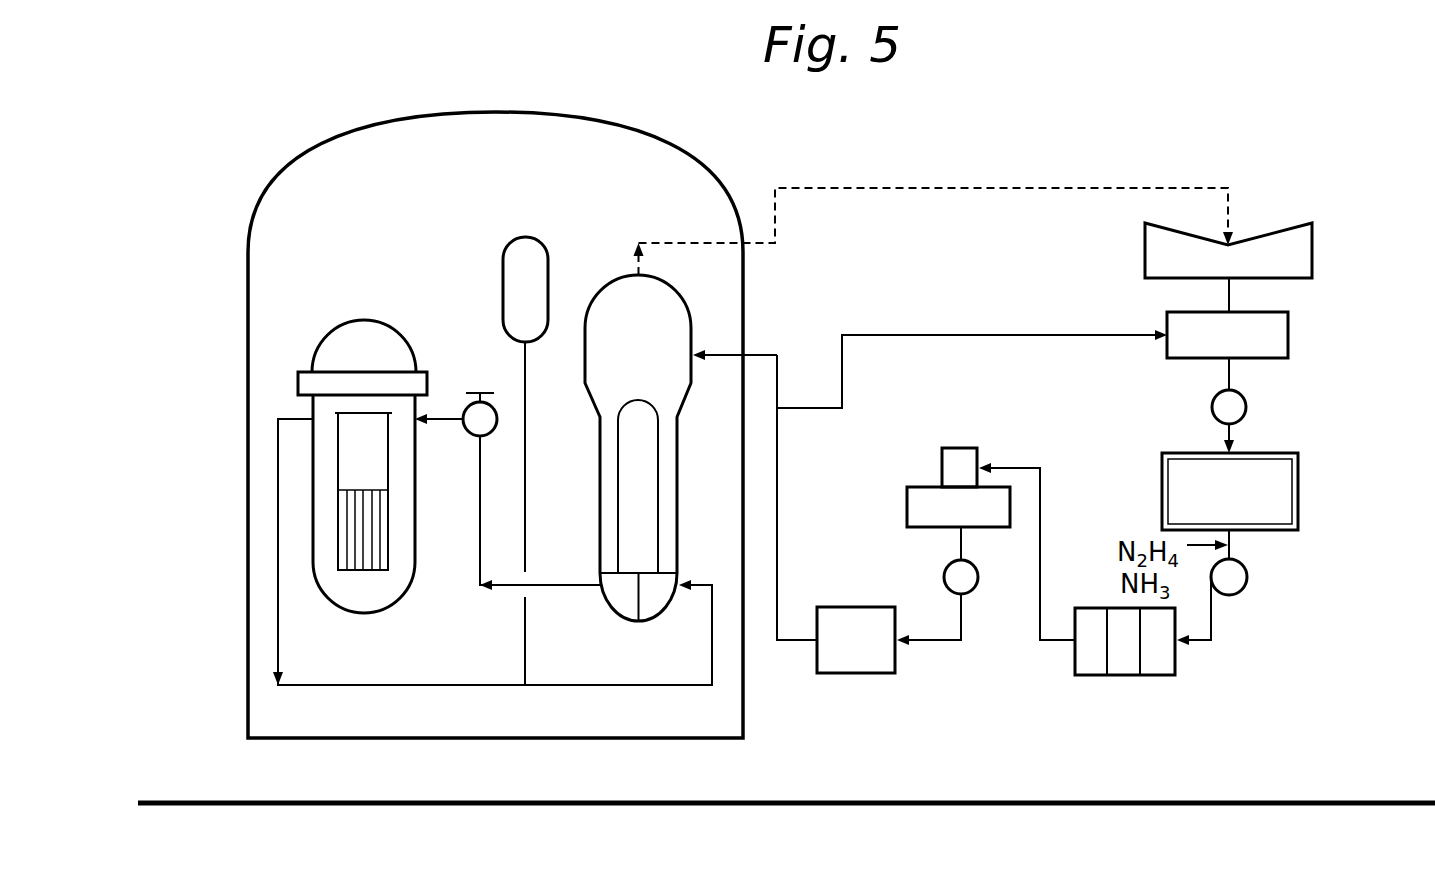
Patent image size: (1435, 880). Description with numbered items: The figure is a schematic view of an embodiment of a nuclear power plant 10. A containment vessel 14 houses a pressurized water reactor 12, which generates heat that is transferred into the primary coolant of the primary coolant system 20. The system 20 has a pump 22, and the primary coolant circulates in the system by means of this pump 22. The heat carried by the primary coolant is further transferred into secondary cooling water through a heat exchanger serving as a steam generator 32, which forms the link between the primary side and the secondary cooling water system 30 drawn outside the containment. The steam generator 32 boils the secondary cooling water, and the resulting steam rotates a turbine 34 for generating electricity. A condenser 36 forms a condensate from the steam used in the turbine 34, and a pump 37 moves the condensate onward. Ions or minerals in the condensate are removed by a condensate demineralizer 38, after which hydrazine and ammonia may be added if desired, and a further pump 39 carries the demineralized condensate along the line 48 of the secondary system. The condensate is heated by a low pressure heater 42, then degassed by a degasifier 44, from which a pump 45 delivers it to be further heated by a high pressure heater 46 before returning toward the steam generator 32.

The nuclear power plant 10 is at (224, 698).
The pressurized water reactor 12 is at (313, 488).
The containment vessel 14 is at (628, 127).
The primary coolant system 20 is at (476, 694).
The pump 22 is at (466, 410).
The secondary cooling water system 30 is at (1000, 675).
The steam generator 32 is at (680, 528).
The turbine 34 is at (1267, 233).
The condenser 36 is at (1290, 335).
The pump 37 is at (1247, 407).
The condensate demineralizer 38 is at (1298, 497).
The pump 39 is at (1247, 573).
The low pressure heater 42 is at (1105, 675).
The degasifier 44 is at (942, 467).
The pump 45 is at (978, 582).
The high pressure heater 46 is at (853, 673).
The steam line 48 is at (883, 335).